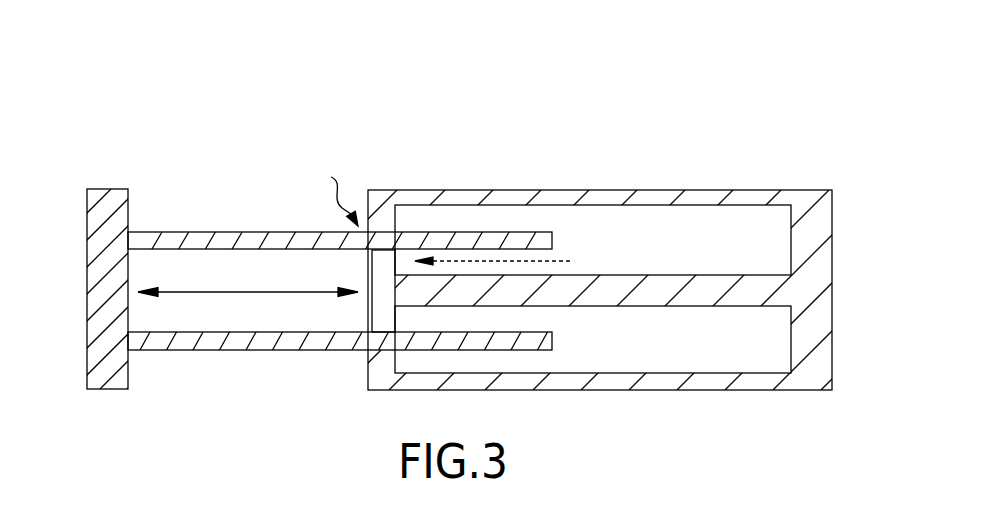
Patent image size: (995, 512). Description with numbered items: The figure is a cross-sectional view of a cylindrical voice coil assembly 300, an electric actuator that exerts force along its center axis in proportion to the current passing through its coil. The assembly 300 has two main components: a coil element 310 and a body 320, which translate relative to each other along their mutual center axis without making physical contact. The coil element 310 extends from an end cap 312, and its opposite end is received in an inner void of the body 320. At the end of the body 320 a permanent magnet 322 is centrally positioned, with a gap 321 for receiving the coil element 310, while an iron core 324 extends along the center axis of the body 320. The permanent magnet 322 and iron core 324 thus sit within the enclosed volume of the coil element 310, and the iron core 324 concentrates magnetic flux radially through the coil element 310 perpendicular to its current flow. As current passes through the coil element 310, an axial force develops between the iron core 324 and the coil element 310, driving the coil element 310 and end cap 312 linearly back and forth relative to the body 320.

The voice coil assembly 300 is at (89, 100).
The coil element 310 is at (193, 369).
The end cap 312 is at (87, 358).
The body 320 is at (682, 162).
The gap 321 is at (280, 155).
The permanent magnet 322 is at (682, 257).
The iron core 324 is at (650, 306).